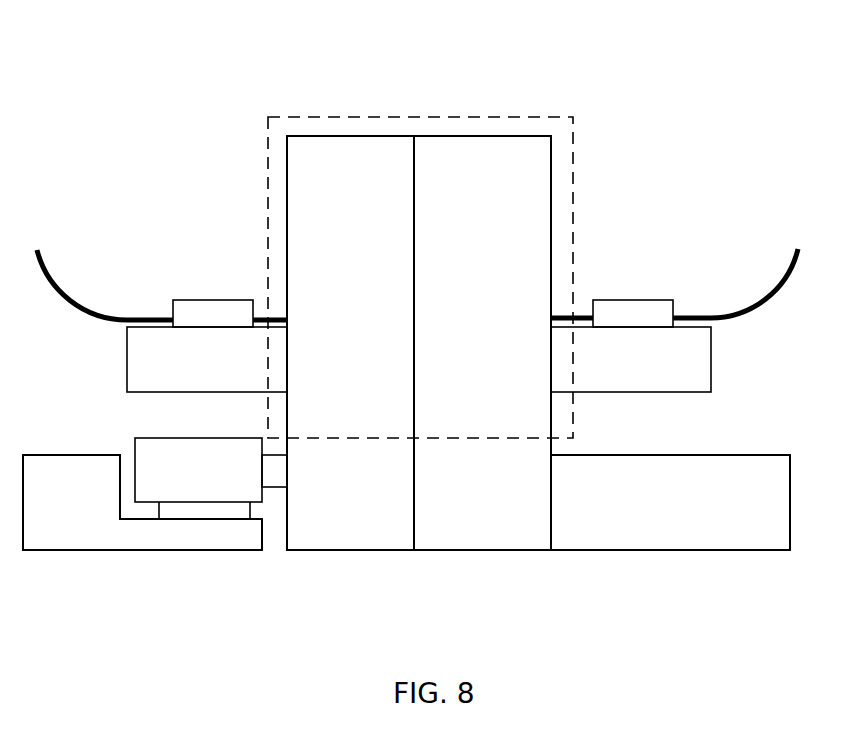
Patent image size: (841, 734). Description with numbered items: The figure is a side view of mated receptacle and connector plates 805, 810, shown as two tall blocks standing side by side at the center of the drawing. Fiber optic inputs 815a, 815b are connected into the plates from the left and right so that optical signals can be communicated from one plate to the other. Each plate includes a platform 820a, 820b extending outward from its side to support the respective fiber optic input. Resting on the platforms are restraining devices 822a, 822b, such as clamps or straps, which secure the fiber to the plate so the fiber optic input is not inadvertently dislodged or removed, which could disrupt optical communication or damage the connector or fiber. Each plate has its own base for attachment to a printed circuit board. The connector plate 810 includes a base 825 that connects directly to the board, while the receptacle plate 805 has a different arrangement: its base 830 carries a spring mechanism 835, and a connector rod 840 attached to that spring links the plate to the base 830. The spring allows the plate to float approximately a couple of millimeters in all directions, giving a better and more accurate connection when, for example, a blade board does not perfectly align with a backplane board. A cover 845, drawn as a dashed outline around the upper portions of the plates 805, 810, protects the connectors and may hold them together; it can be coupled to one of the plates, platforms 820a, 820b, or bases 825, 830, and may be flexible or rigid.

The receptacle plate 805 is at (348, 153).
The connector plate 810 is at (483, 153).
The cover 845 is at (567, 117).
The fiber optic input 815a is at (75, 300).
The fiber optic input 815b is at (757, 298).
The restraining device 822a is at (215, 308).
The restraining device 822b is at (633, 307).
The platform 820a is at (142, 363).
The platform 820b is at (698, 365).
The base 825 is at (668, 528).
The base 830 is at (48, 533).
The spring mechanism 835 is at (187, 495).
The connector rod 840 is at (277, 478).